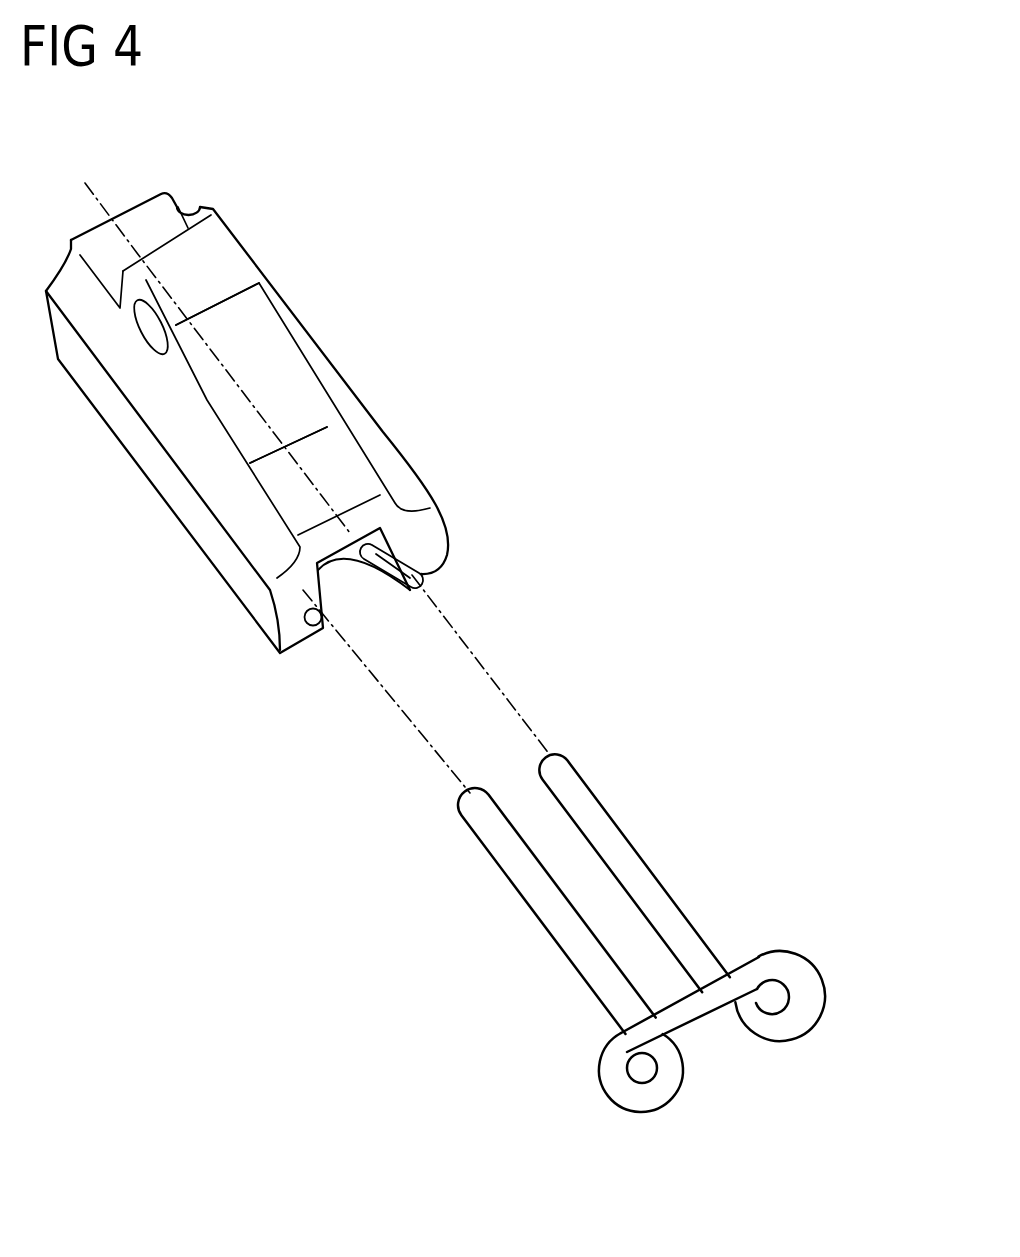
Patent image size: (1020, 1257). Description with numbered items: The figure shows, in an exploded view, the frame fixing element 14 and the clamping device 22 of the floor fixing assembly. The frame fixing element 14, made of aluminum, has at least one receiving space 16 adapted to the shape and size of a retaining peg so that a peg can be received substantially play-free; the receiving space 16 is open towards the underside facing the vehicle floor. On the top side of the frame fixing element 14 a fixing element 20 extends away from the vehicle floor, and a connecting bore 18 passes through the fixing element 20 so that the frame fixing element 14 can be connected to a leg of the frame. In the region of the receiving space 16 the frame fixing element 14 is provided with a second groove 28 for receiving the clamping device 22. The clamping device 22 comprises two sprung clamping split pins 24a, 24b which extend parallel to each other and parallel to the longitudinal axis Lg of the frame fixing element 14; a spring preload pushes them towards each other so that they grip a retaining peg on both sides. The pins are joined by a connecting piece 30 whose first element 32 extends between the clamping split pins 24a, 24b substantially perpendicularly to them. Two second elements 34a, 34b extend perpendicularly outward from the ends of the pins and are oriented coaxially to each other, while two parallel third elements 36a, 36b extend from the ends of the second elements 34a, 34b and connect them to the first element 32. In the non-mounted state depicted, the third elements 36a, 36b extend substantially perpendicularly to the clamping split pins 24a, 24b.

The frame fixing element 14 is at (362, 404).
The receiving space 16 is at (340, 567).
The connecting bore 18 is at (140, 333).
The fixing element 20 is at (273, 326).
The clamping device 22 is at (532, 804).
The clamping split pin 24a is at (530, 887).
The clamping split pin 24b is at (592, 800).
The second groove 28 is at (283, 640).
The connecting piece 30 is at (715, 1025).
The first element 32 is at (700, 1012).
The second element 34a is at (660, 1096).
The second element 34b is at (798, 1032).
The third element 36a is at (615, 1080).
The third element 36b is at (828, 961).
The longitudinal axis Lg is at (98, 190).